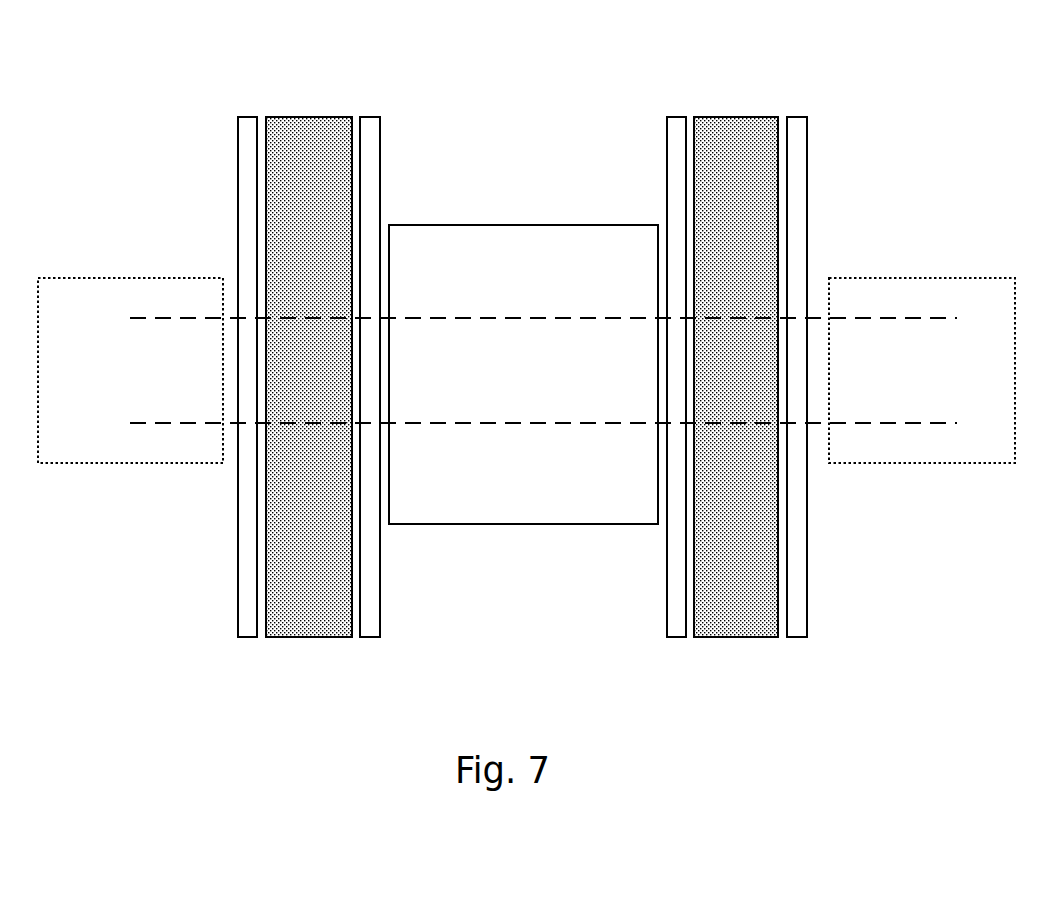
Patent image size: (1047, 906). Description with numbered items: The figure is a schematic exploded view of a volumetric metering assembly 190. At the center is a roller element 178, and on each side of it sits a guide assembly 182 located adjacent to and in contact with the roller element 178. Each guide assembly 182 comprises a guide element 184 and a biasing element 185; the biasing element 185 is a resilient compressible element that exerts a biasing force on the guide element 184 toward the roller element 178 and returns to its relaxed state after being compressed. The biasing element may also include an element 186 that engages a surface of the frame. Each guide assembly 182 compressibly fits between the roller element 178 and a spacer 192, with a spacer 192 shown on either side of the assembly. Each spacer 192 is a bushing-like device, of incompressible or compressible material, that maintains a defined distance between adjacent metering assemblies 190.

The roller element 178 is at (523, 374).
The guide assembly 182 is at (384, 652).
The guide element 184 is at (383, 193).
The biasing element 185 is at (522, 377).
The element engaging frame 186 is at (236, 210).
The volumetric metering assembly 190 is at (228, 93).
The spacer 192 is at (526, 370).